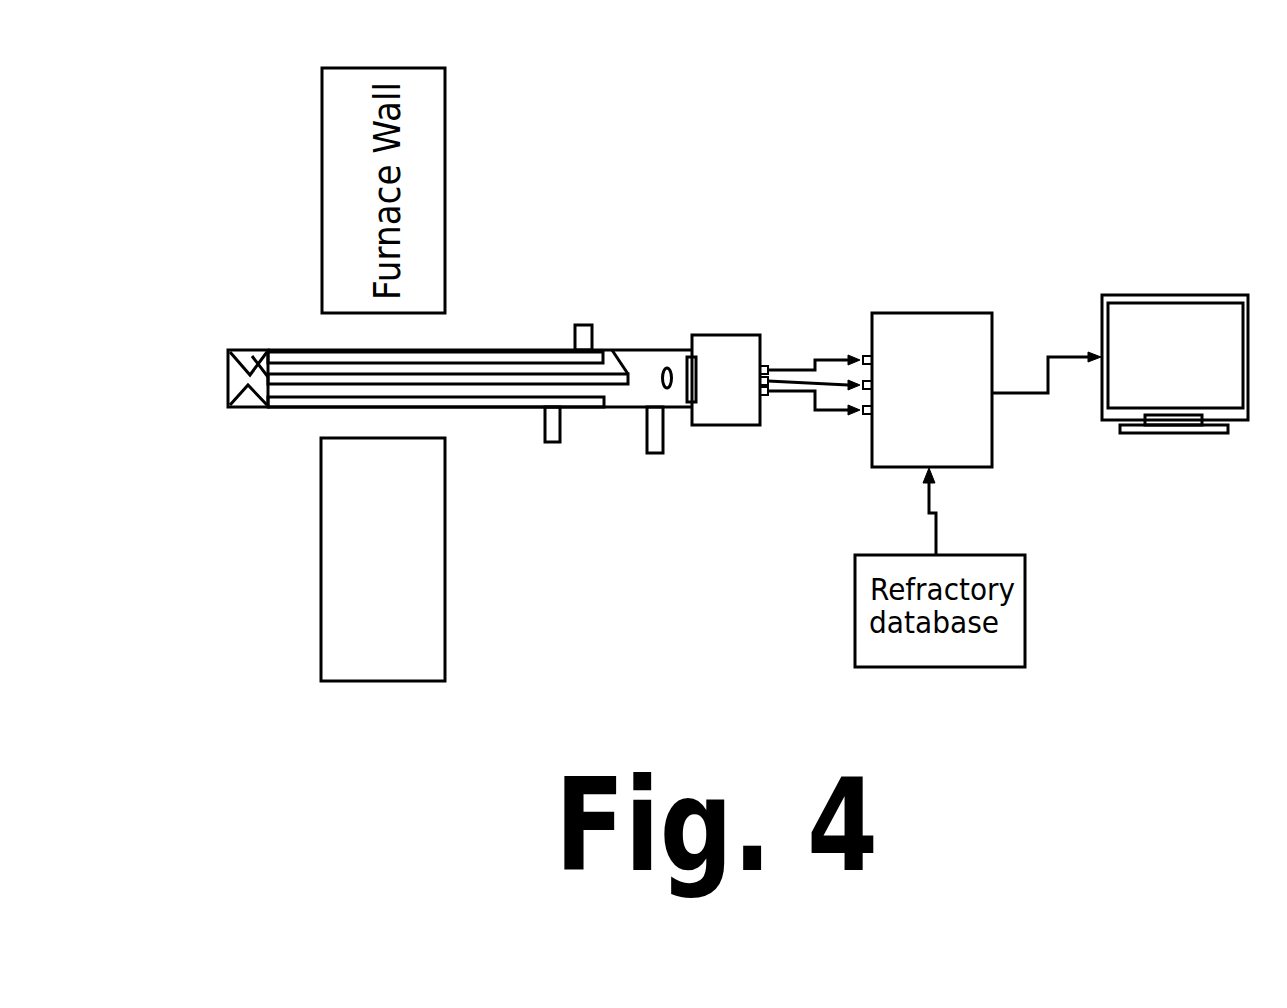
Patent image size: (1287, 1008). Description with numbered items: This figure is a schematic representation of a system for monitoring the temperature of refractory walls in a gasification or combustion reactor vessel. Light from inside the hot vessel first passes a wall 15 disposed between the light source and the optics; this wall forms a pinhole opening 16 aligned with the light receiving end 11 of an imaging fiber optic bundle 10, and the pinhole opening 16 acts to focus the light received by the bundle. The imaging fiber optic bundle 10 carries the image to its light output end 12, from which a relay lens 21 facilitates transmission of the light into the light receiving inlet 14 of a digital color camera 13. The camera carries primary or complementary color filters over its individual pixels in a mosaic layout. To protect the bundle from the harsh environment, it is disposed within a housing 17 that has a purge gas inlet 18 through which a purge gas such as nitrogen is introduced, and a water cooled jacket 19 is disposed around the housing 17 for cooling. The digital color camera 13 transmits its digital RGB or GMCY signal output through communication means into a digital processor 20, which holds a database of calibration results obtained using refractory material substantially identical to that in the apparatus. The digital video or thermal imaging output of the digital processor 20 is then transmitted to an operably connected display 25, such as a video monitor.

The imaging fiber optic bundle 10 is at (476, 372).
The light receiving end 11 is at (245, 350).
The light output end 12 is at (616, 350).
The digital color camera 13 is at (763, 340).
The light receiving inlet 14 is at (690, 350).
The wall 15 is at (247, 407).
The pinhole opening 16 is at (228, 354).
The housing 17 is at (619, 407).
The purge gas inlet 18 is at (664, 440).
The water cooled jacket 19 is at (500, 407).
The digital processor 20 is at (927, 313).
The relay lens 21 is at (672, 378).
The display 25 is at (1162, 295).